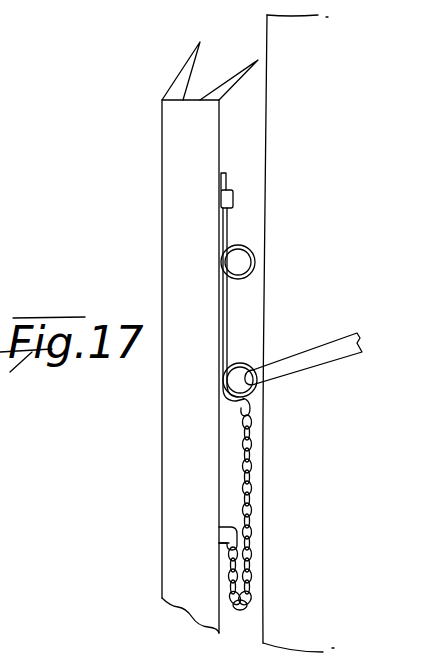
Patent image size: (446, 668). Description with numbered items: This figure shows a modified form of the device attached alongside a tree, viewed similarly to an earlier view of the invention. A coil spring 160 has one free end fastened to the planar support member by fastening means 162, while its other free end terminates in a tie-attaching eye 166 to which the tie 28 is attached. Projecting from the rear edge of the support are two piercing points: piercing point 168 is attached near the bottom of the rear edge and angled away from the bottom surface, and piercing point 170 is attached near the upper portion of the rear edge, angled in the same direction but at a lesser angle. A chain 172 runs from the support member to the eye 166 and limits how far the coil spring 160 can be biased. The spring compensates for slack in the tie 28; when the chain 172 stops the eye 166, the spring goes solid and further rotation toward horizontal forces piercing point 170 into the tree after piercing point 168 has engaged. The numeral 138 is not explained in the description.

The post 138 is at (0, 33).
The piercing point 170 is at (177, 63).
The piercing point 168 is at (232, 72).
The fastening means 162 is at (233, 200).
The coil spring 160 is at (253, 265).
The tie-attaching eye 166 is at (265, 392).
The tie 28 is at (313, 345).
The chain 172 is at (250, 530).